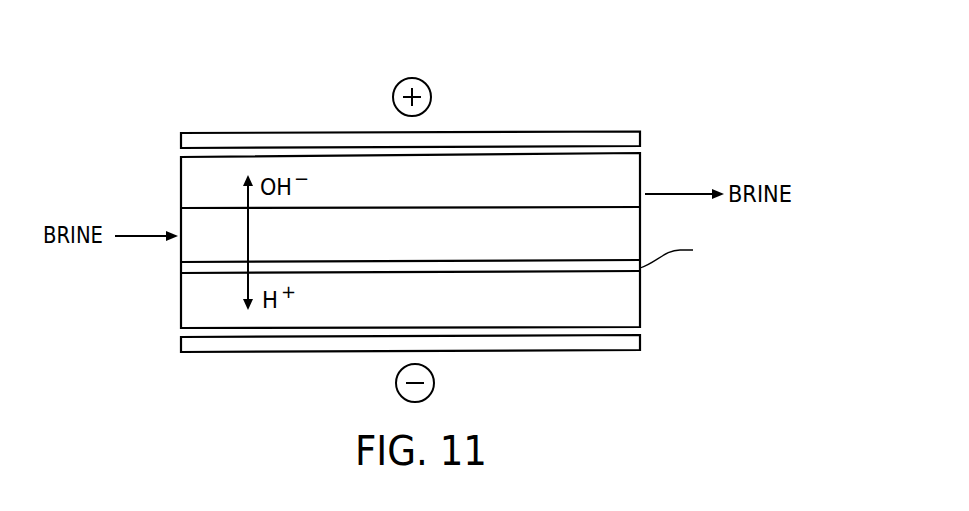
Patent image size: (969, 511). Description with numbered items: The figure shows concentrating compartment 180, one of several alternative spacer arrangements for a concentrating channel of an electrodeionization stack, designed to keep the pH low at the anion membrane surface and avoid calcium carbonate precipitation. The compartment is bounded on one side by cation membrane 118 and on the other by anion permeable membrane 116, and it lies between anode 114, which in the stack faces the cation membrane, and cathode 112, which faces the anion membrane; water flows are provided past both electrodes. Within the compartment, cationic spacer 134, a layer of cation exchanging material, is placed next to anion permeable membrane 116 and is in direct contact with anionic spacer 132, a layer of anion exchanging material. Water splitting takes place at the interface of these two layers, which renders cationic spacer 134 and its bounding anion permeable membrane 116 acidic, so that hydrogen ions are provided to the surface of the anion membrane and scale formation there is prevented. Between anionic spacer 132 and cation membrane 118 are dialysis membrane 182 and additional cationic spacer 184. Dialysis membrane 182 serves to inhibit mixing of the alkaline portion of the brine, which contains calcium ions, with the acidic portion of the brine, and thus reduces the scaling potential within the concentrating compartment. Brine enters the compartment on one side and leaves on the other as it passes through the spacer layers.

The concentrating compartment 180 is at (244, 113).
The anode 114 is at (431, 94).
The cathode 112 is at (434, 383).
The cation permeable membrane 118 is at (533, 131).
The anion permeable membrane 116 is at (537, 351).
The anionic spacer 132 is at (640, 160).
The cationic spacer 134 is at (640, 247).
The dialysis membrane 182 is at (640, 270).
The additional cationic spacer 184 is at (633, 302).